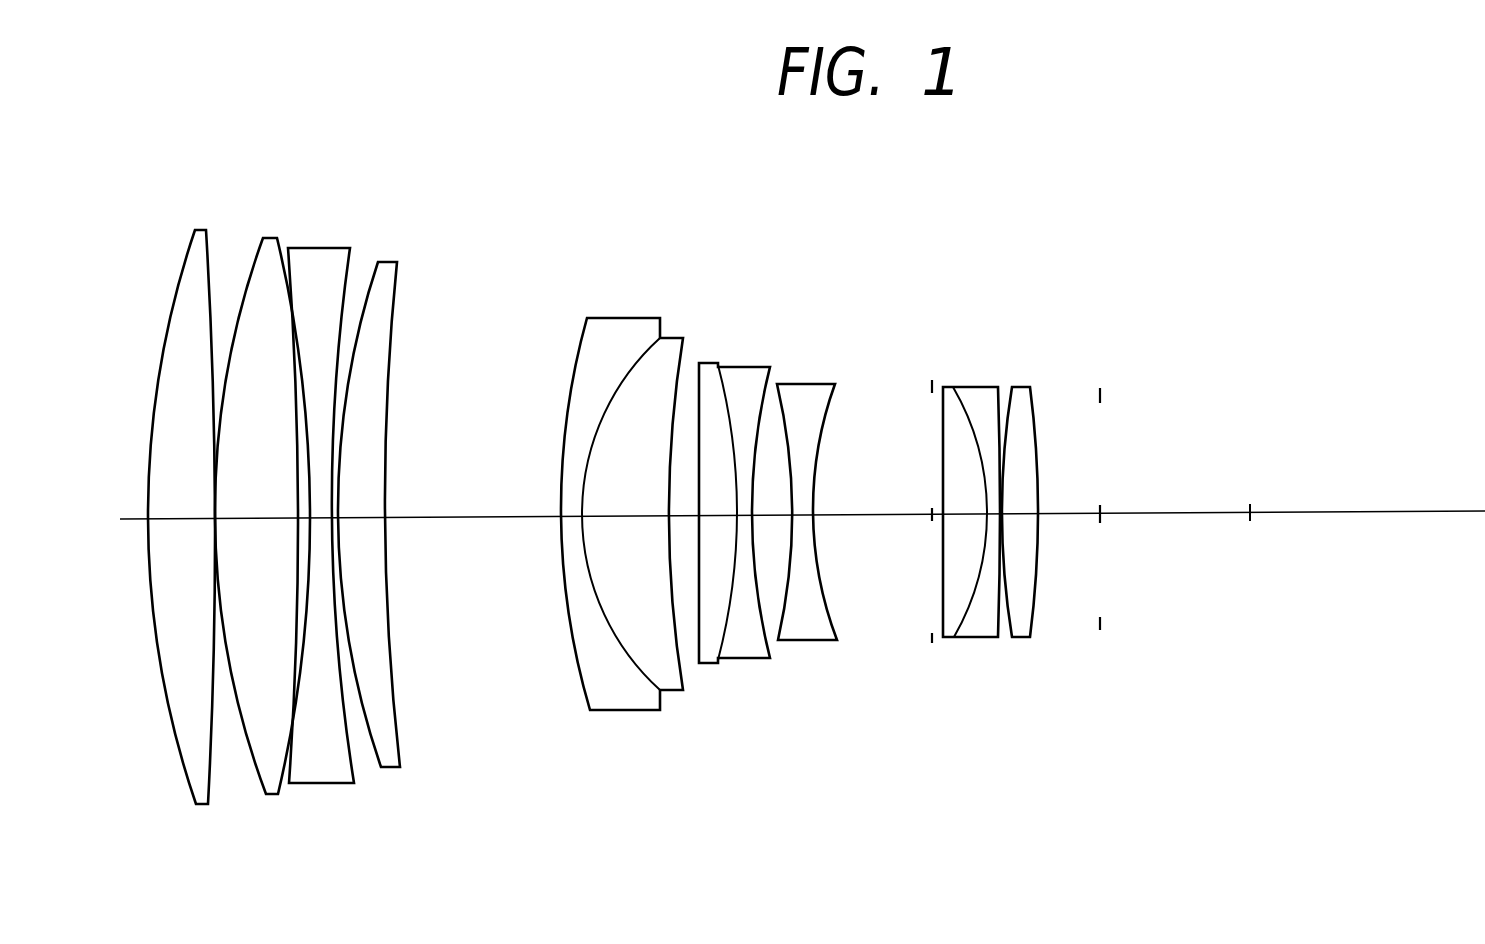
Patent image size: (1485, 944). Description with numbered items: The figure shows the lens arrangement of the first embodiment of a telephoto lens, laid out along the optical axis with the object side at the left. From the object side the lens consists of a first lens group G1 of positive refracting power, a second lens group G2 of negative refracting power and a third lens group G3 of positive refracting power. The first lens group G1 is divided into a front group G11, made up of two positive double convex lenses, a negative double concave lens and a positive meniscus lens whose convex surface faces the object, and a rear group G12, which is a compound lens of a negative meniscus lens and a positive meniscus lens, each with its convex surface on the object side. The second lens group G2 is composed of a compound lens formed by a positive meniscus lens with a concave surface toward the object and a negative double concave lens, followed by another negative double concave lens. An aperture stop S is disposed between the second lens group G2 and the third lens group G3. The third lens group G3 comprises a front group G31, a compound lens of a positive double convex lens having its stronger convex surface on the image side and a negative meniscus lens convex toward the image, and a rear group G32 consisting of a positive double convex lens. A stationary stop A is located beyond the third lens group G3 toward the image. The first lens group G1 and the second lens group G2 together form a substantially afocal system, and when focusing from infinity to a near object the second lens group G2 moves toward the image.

The first lens group G1 is at (425, 568).
The front group of the first lens group G11 is at (427, 801).
The rear group of the first lens group G12 is at (630, 548).
The second lens group G2 is at (848, 670).
The third lens group G3 is at (1000, 566).
The front group of the third lens group G31 is at (1001, 645).
The rear group of the third lens group G32 is at (1030, 544).
The aperture stop S is at (932, 487).
The stationary stop A is at (1099, 486).